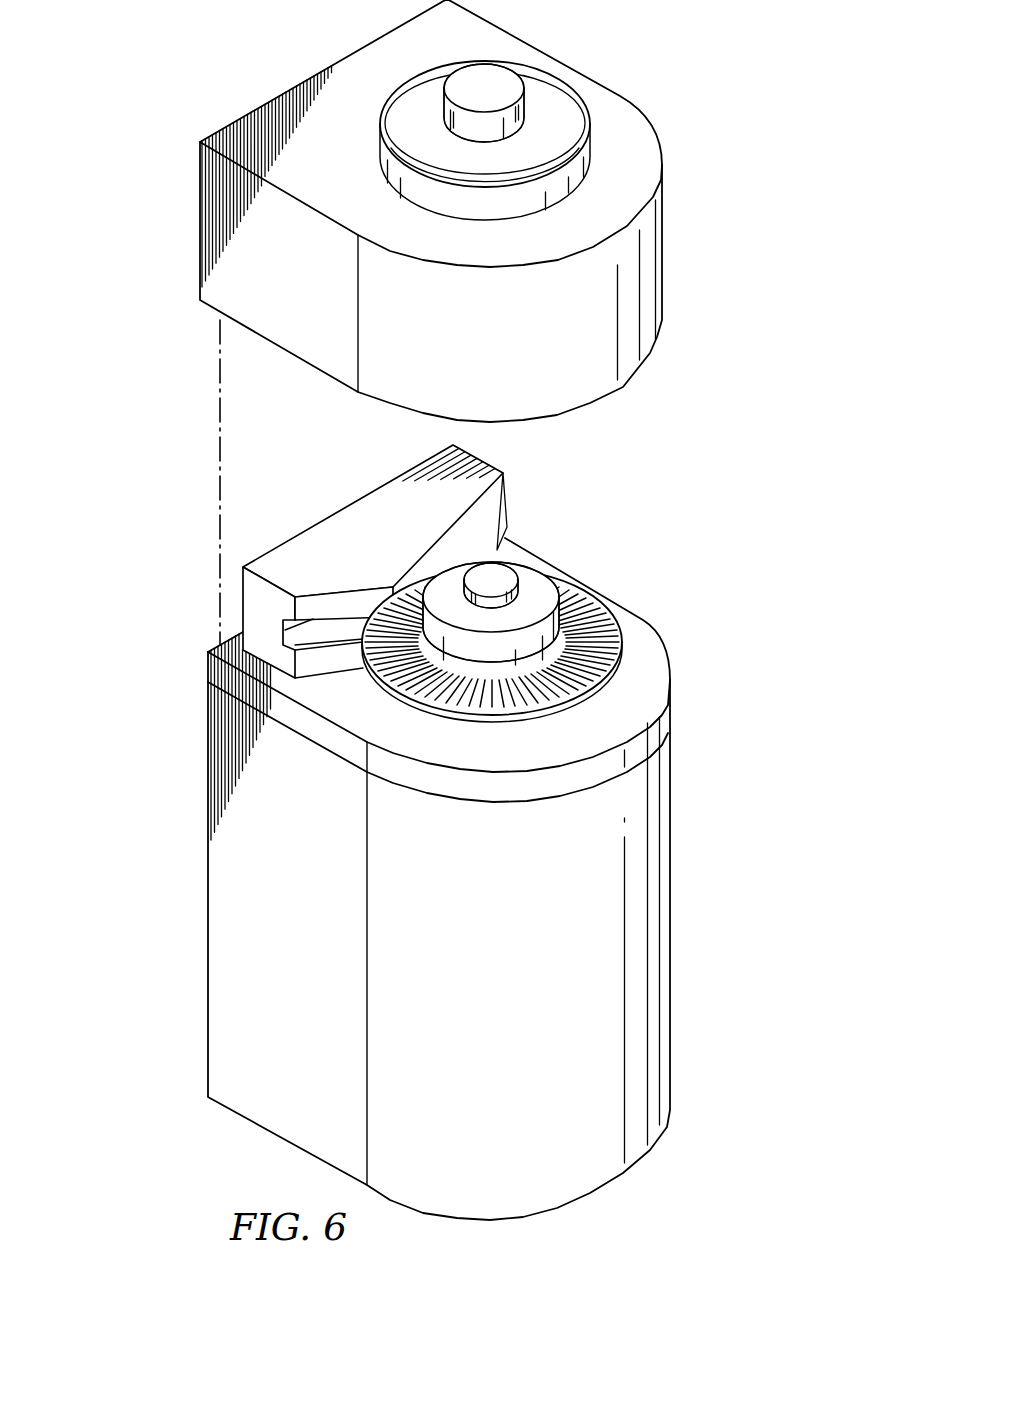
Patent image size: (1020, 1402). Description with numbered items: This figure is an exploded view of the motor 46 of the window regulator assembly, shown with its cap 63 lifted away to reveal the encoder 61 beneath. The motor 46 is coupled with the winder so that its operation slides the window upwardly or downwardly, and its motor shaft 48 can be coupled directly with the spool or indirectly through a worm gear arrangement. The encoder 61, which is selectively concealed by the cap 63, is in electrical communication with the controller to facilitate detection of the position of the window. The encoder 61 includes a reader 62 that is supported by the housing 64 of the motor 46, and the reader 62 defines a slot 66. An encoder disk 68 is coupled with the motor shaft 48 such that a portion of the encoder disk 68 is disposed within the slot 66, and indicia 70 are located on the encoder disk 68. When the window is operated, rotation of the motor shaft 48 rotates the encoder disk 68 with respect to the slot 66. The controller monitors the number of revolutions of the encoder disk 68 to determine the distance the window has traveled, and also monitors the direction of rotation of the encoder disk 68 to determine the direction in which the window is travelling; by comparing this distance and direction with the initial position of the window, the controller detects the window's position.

The motor 46 is at (389, 610).
The motor shaft 48 is at (498, 576).
The encoder 61 is at (375, 562).
The reader 62 is at (305, 547).
The cap 63 is at (355, 69).
The housing 64 is at (218, 883).
The slot 66 is at (333, 636).
The encoder disk 68 is at (522, 644).
The indicia 70 is at (586, 602).